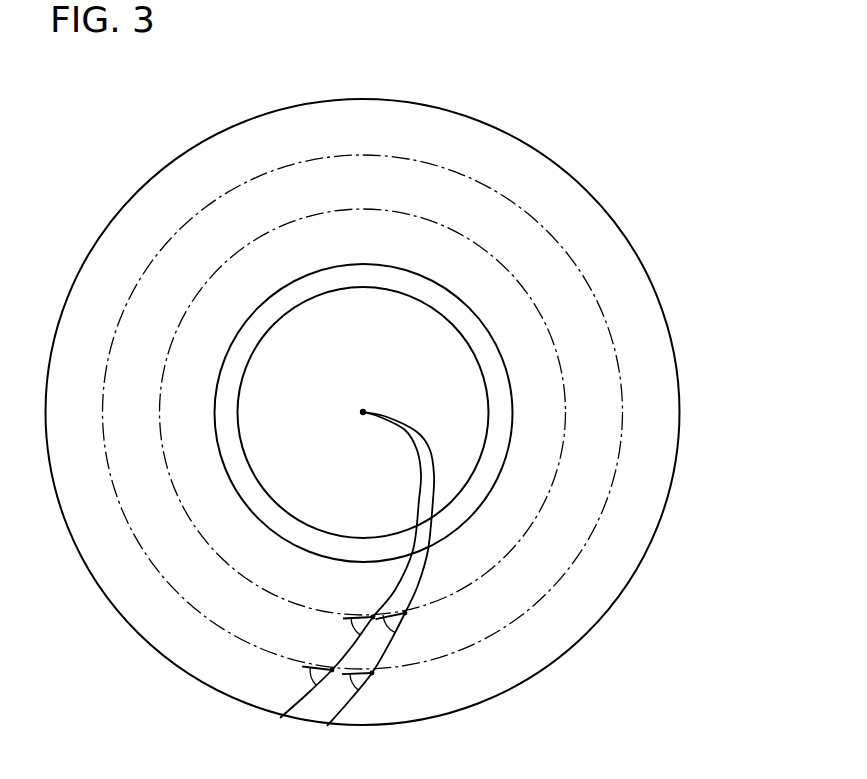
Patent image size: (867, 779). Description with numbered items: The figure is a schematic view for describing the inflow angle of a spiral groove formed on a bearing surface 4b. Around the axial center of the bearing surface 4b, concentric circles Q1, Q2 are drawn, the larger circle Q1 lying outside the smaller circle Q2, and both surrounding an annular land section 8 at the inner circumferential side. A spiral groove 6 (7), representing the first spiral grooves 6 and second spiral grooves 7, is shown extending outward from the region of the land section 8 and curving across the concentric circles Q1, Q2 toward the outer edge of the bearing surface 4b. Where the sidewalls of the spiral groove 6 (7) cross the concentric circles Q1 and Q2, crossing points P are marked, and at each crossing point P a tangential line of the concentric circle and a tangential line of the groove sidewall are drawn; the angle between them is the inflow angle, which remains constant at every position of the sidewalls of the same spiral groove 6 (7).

The bearing surface 4b is at (575, 197).
The concentric circle Q1 is at (565, 368).
The concentric circle Q2 is at (625, 410).
The land section 8 is at (357, 275).
The first spiral groove 6 is at (414, 589).
The second spiral groove 7 is at (372, 673).
The crossing point P is at (373, 617).